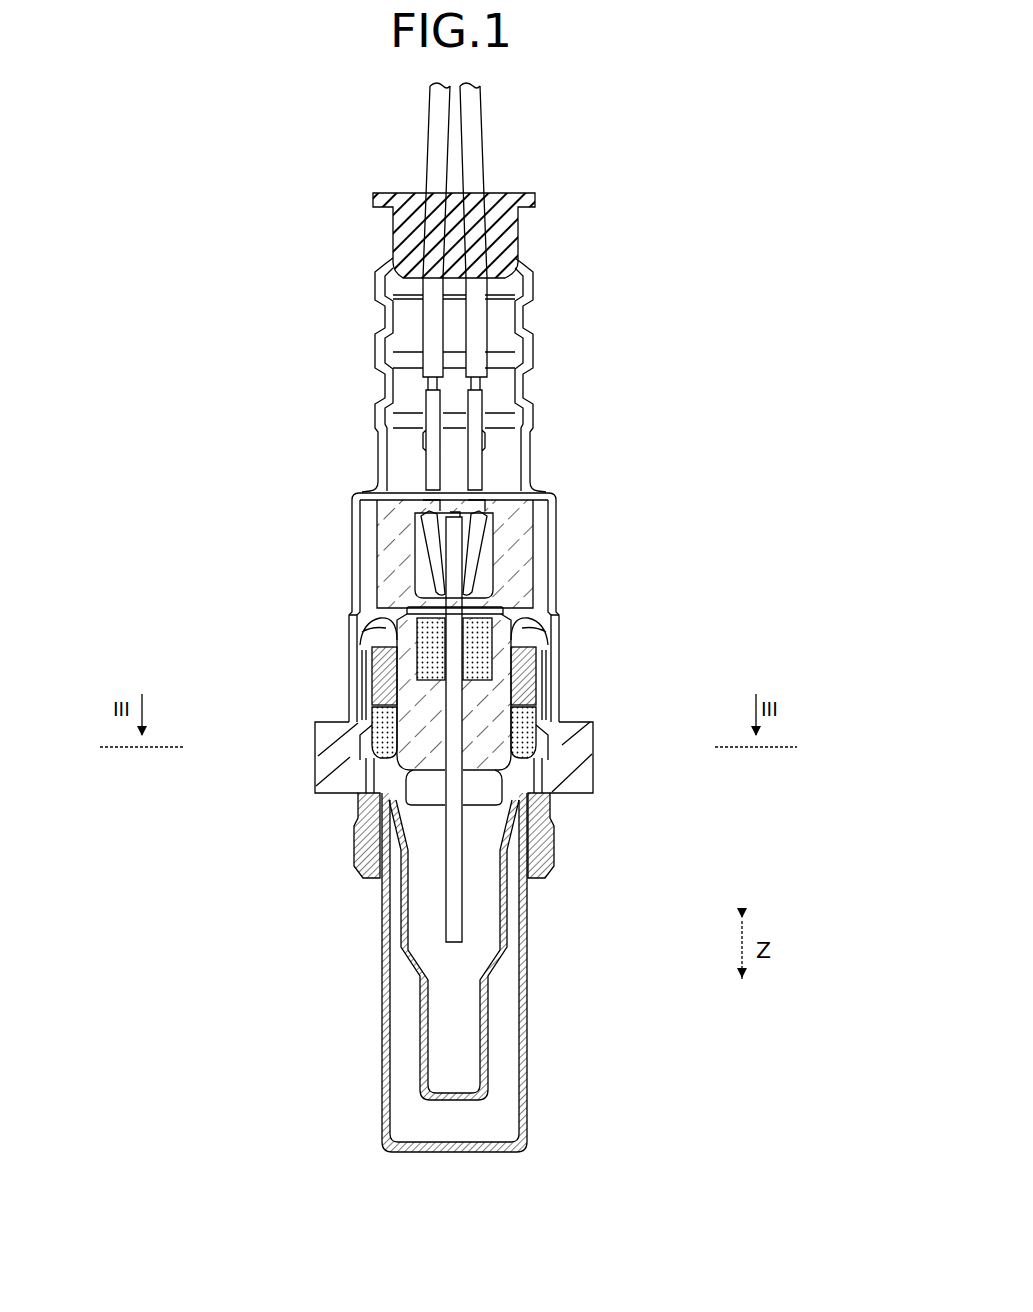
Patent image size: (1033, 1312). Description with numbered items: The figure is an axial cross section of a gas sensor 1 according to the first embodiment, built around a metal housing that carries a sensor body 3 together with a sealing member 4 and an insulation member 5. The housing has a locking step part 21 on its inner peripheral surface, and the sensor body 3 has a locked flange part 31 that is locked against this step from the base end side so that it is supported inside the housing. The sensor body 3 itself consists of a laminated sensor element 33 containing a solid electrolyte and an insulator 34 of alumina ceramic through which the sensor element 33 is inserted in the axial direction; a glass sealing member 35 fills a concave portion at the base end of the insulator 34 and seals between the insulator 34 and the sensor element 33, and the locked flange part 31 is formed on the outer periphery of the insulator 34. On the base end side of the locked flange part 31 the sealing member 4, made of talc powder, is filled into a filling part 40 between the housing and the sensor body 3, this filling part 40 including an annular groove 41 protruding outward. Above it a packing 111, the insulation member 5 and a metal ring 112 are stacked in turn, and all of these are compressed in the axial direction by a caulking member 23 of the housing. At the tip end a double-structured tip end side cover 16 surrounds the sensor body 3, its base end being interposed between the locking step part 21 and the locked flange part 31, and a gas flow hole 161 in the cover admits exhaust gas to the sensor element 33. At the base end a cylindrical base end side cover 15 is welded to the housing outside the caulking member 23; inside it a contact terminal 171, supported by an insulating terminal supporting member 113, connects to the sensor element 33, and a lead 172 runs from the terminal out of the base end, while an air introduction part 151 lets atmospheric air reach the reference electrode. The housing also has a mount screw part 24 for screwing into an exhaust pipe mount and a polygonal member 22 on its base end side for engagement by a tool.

The gas sensor 1 is at (282, 1131).
The sensor body 3 is at (415, 718).
The sealing member 4 is at (525, 712).
The insulation member 5 is at (536, 650).
The base end side cover 15 is at (556, 523).
The tip end side cover 16 is at (523, 1058).
The locking step part 21 is at (377, 800).
The polygonal member 22 is at (573, 757).
The caulking member 23 is at (355, 615).
The mount screw part 24 is at (371, 852).
The locked flange part 31 is at (397, 772).
The sensor element 33 is at (453, 852).
The insulator 34 is at (490, 762).
The glass sealing member 35 is at (480, 632).
The filling part 40 is at (550, 738).
The annular groove 41 is at (362, 744).
The packing 111 is at (395, 690).
The metal ring 112 is at (353, 642).
The terminal supporting member 113 is at (393, 523).
The air introduction part 151 is at (535, 278).
The gas flow hole 161 is at (399, 940).
The contact terminal 171 is at (473, 556).
The lead 172 is at (477, 152).